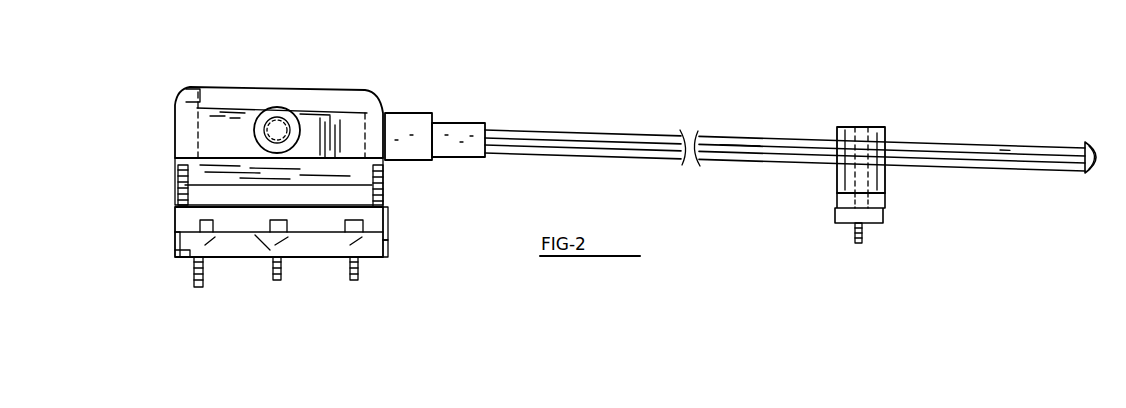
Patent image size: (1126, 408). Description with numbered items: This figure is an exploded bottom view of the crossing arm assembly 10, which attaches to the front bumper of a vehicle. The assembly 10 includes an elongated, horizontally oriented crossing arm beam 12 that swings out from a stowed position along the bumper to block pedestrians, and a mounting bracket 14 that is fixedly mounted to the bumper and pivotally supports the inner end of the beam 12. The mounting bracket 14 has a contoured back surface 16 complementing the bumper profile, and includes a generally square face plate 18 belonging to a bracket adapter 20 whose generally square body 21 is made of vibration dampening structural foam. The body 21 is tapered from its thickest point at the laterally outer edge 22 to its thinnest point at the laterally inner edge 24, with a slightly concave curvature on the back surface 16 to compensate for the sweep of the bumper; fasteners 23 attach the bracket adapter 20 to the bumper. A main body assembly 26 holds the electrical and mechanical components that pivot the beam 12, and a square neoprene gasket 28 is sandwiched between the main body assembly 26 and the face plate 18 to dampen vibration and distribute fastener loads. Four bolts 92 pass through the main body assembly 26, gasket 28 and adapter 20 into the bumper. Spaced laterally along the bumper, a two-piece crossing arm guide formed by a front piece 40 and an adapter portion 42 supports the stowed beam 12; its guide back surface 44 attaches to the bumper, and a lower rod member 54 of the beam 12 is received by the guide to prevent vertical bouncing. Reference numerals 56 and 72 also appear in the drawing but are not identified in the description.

The crossing arm assembly 10 is at (982, 238).
The crossing arm beam 12 is at (579, 130).
The mounting bracket 14 is at (172, 124).
The back surface 16 is at (225, 260).
The face plate 18 is at (386, 237).
The bracket adapter 20 is at (174, 242).
The body 21 is at (278, 272).
The laterally outer edge 22 is at (172, 250).
The fasteners 23 is at (200, 288).
The laterally inner edge 24 is at (386, 248).
The main body assembly 26 is at (250, 100).
The gasket 28 is at (173, 207).
The front piece of crossing arm guide 40 is at (893, 128).
The adapter portion of crossing arm guide 42 is at (887, 214).
The guide back surface 44 is at (846, 220).
The lower rod member 54 is at (1023, 162).
The rod section 56 is at (710, 163).
The left post 72 is at (178, 187).
The bolts 92 is at (378, 199).